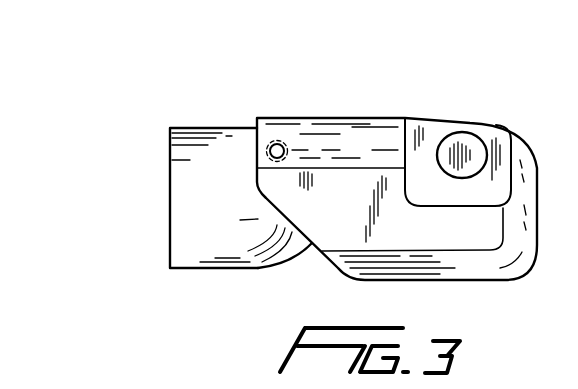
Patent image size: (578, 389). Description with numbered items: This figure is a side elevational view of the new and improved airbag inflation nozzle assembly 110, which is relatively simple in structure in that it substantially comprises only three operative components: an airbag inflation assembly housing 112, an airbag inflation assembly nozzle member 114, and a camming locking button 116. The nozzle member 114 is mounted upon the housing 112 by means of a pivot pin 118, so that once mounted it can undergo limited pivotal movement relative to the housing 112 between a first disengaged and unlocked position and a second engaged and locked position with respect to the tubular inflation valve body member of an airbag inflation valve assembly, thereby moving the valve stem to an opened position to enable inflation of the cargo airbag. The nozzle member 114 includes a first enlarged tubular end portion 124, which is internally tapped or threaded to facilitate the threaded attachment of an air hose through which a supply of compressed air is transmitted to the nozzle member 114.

The airbag inflation nozzle assembly 110 is at (326, 184).
The airbag inflation assembly housing 112 is at (353, 140).
The airbag inflation assembly nozzle member 114 is at (240, 233).
The camming locking button 116 is at (470, 152).
The pivot pin 118 is at (278, 147).
The first enlarged tubular end portion 124 is at (208, 183).